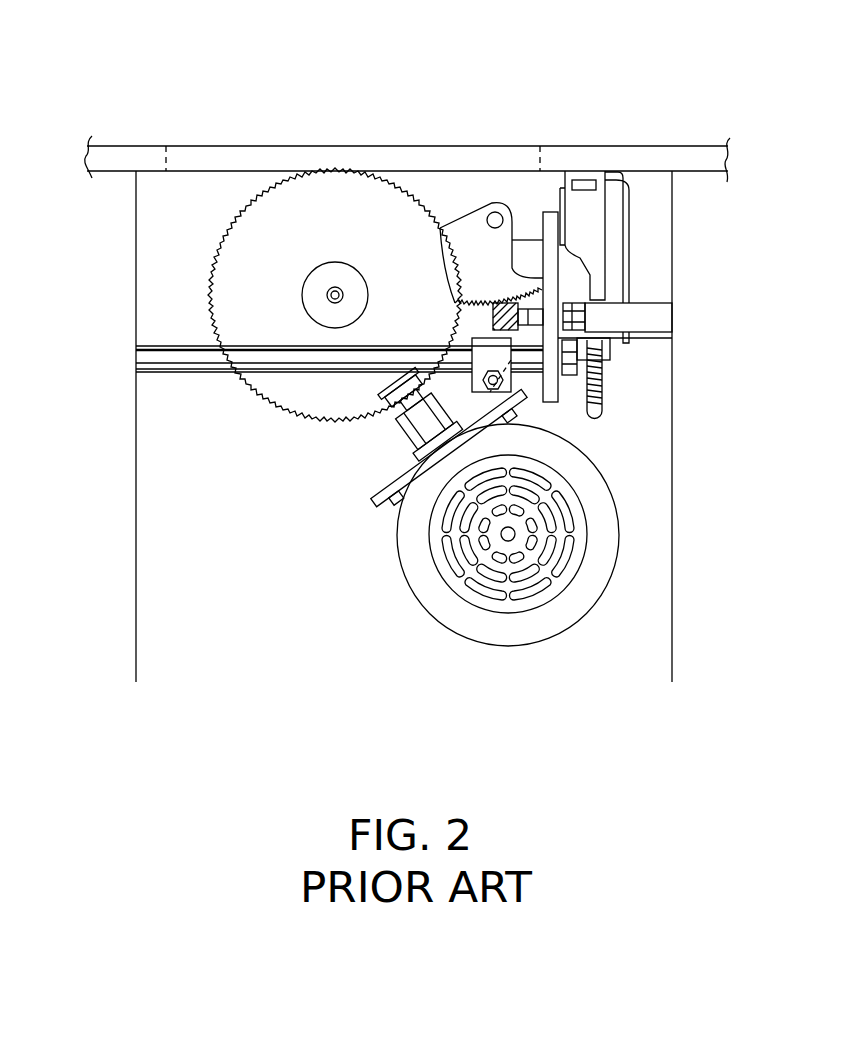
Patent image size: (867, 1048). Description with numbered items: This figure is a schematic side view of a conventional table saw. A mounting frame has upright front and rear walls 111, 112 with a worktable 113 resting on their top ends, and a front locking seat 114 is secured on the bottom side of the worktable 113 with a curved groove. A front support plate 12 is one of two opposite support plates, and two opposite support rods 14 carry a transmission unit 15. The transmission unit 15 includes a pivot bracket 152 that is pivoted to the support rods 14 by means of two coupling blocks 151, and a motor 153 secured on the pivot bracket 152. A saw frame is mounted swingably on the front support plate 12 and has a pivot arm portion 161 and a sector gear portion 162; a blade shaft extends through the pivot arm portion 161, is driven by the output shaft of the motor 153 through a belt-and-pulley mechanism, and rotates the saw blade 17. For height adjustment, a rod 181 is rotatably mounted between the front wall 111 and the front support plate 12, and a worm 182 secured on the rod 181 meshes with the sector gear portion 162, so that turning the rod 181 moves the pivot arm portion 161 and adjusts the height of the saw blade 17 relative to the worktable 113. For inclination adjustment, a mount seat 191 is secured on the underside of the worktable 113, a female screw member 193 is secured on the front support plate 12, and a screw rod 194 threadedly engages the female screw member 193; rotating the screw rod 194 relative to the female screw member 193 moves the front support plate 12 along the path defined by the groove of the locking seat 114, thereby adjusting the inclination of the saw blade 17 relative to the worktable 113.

The front support plate 12 is at (533, 200).
The support rods 14 is at (152, 363).
The transmission unit 15 is at (512, 646).
The saw blade 17 is at (250, 190).
The front wall 111 is at (672, 632).
The rear wall 112 is at (136, 628).
The worktable 113 is at (103, 148).
The front locking seat 114 is at (590, 233).
The coupling blocks 151 is at (523, 408).
The pivot bracket 152 is at (372, 502).
The motor 153 is at (418, 587).
The pivot arm portion 161 is at (485, 268).
The sector gear portion 162 is at (487, 299).
The rod 181 is at (647, 313).
The worm 182 is at (490, 316).
The mount seat 191 is at (628, 213).
The female screw member 193 is at (577, 352).
The screw rod 194 is at (604, 382).